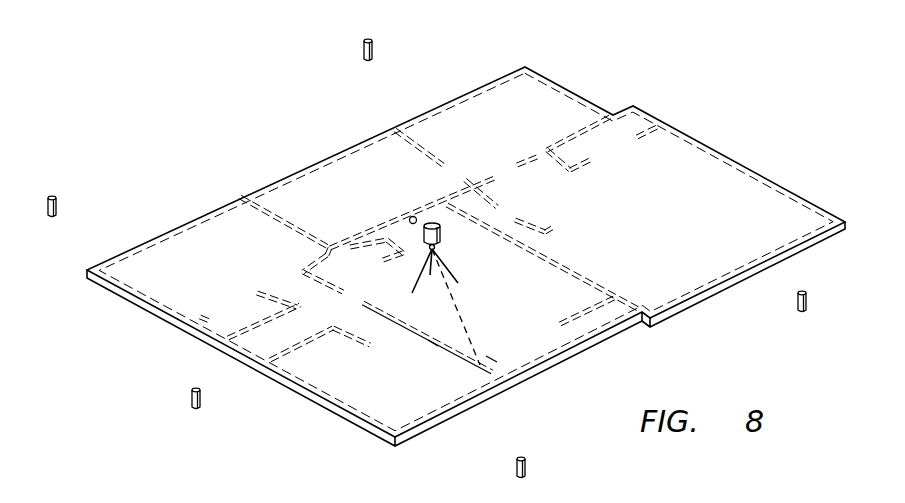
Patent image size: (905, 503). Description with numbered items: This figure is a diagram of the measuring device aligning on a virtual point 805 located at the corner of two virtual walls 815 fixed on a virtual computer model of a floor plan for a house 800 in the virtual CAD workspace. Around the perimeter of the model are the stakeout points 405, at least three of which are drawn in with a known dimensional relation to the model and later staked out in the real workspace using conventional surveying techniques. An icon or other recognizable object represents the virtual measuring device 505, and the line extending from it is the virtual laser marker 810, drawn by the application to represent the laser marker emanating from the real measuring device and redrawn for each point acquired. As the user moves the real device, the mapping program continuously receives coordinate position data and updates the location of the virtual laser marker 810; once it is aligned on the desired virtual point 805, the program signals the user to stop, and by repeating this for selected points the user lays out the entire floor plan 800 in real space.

The house floor plan 800 is at (692, 104).
The stakeout points 405 is at (363, 47).
The virtual measuring device 505 is at (450, 243).
The virtual point 805 is at (478, 360).
The virtual laser marker 810 is at (455, 302).
The virtual walls 815 is at (433, 344).